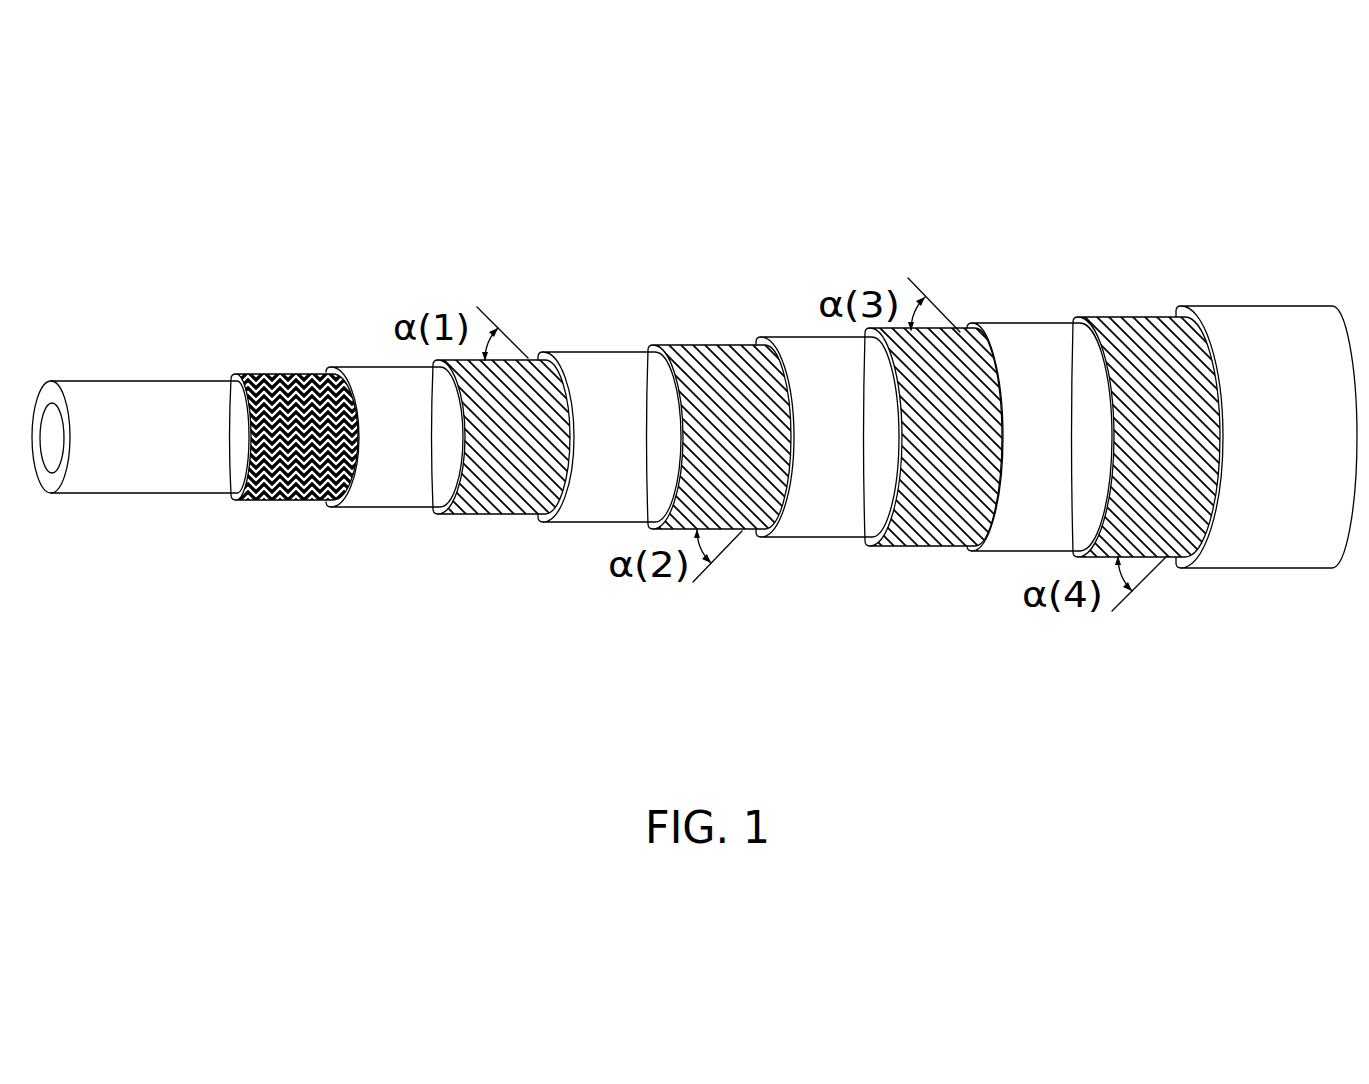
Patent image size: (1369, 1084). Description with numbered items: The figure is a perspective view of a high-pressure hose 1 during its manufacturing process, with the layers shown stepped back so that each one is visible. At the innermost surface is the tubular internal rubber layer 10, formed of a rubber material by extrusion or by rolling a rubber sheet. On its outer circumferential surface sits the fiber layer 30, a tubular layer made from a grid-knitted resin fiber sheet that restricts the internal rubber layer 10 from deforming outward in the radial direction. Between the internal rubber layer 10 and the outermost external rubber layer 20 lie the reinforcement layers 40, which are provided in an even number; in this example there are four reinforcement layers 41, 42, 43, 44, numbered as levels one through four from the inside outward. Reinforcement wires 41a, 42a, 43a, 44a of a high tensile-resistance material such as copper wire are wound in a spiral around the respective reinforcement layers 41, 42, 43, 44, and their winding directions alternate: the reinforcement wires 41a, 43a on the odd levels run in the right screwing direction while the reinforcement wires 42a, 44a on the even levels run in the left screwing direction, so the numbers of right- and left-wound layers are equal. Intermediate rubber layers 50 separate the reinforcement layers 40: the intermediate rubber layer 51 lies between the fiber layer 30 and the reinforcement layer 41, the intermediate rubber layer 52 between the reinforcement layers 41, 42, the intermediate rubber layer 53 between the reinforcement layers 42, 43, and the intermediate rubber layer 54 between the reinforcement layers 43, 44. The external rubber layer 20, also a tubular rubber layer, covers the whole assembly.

The high-pressure hose 1 is at (1243, 237).
The internal rubber layer 10 is at (120, 494).
The external rubber layer 20 is at (1262, 569).
The fiber layer 30 is at (277, 501).
The reinforcement layers 40 is at (826, 437).
The reinforcement layer (level 1) 41 is at (510, 519).
The reinforcement wire 41a is at (530, 500).
The reinforcement layer (level 2) 42 is at (719, 353).
The reinforcement wire 42a is at (742, 345).
The reinforcement layer (level 3) 43 is at (933, 514).
The reinforcement wire 43a is at (918, 547).
The reinforcement layer (level 4) 44 is at (1146, 365).
The reinforcement wire 44a is at (1168, 315).
The intermediate rubber layers 50 is at (719, 461).
The intermediate rubber layer 51 is at (380, 508).
The intermediate rubber layer 52 is at (580, 353).
The intermediate rubber layer 53 is at (797, 337).
The intermediate rubber layer 54 is at (1008, 323).